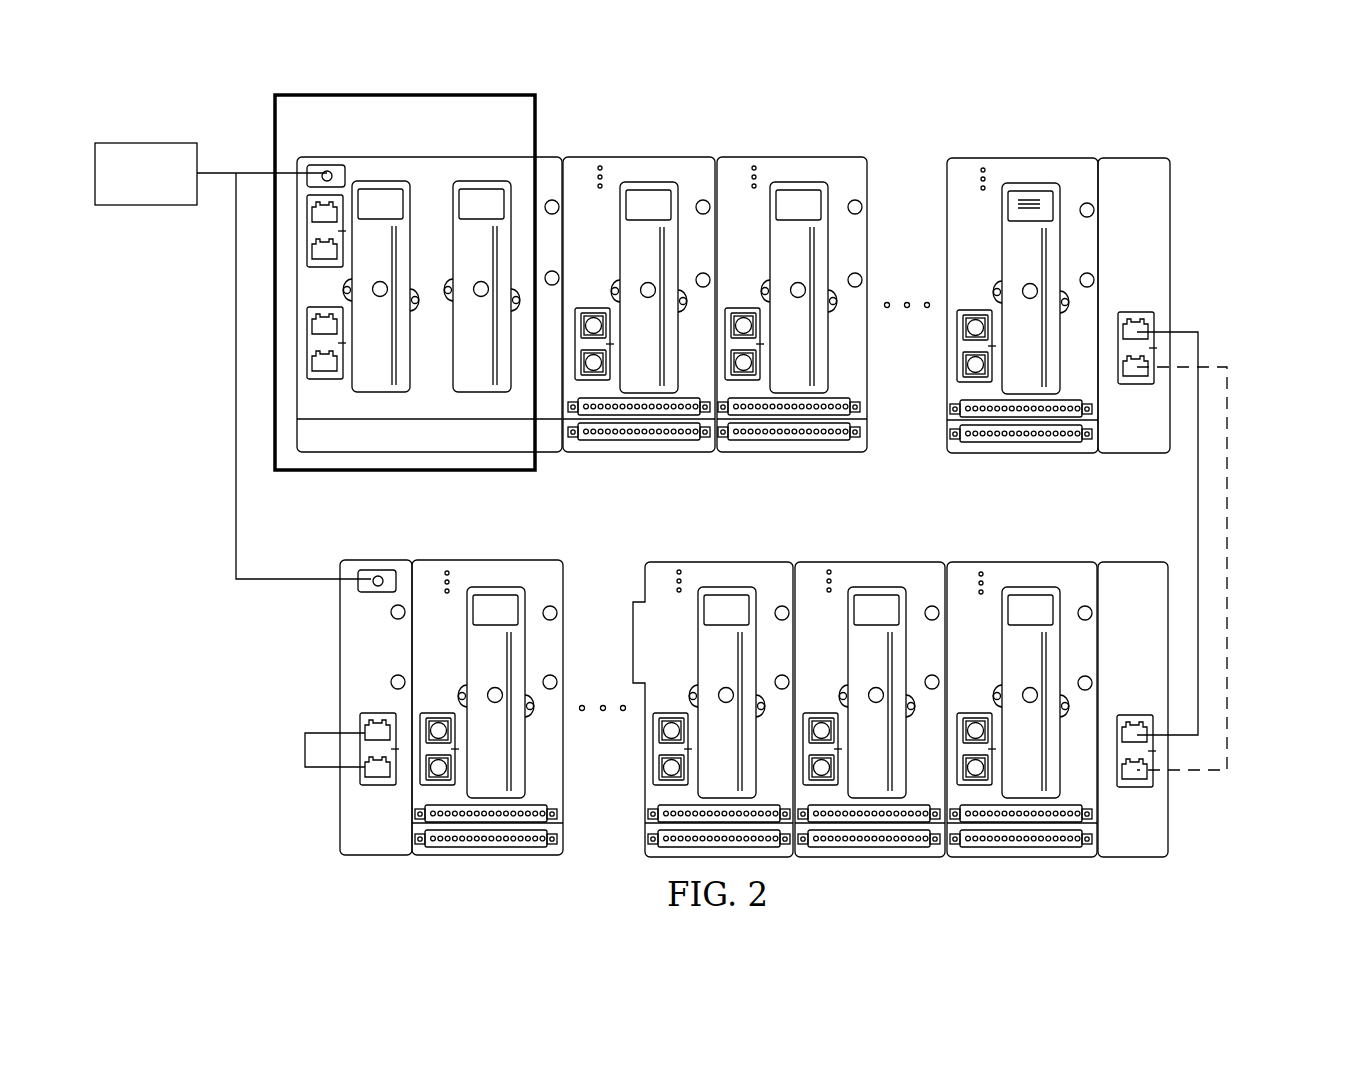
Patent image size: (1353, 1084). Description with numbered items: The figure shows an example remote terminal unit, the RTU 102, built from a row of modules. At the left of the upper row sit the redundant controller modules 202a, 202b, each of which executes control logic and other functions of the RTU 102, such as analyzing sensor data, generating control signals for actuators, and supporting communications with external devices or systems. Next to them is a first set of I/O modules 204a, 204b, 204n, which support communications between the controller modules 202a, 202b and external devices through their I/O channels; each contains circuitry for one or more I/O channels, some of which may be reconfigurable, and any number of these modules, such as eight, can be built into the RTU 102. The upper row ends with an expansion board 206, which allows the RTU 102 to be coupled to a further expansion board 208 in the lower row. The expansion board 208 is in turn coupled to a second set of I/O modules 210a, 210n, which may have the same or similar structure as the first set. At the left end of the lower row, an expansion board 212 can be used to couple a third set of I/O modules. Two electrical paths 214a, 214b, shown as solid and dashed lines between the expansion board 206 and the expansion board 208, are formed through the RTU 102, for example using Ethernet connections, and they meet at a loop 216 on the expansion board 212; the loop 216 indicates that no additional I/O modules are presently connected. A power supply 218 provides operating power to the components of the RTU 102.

The RTU 102 is at (1238, 223).
The controller module 202a is at (380, 193).
The controller module 202b is at (480, 195).
The I/O module 204a is at (647, 193).
The I/O module 204b is at (797, 193).
The I/O module 204n is at (1032, 197).
The expansion board 206 is at (1112, 147).
The expansion board 208 is at (1160, 817).
The I/O module 210a is at (1033, 548).
The I/O module 210n is at (475, 548).
The expansion board 212 is at (338, 813).
The electrical path 214a is at (1197, 503).
The electrical path 214b is at (1230, 448).
The loop 216 is at (303, 751).
The power supply 218 is at (147, 143).